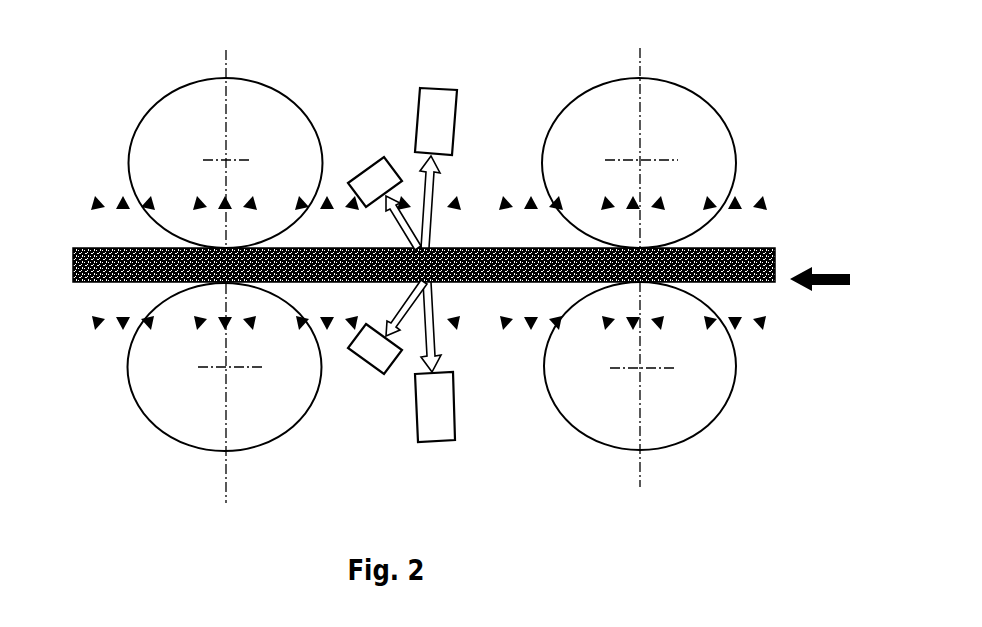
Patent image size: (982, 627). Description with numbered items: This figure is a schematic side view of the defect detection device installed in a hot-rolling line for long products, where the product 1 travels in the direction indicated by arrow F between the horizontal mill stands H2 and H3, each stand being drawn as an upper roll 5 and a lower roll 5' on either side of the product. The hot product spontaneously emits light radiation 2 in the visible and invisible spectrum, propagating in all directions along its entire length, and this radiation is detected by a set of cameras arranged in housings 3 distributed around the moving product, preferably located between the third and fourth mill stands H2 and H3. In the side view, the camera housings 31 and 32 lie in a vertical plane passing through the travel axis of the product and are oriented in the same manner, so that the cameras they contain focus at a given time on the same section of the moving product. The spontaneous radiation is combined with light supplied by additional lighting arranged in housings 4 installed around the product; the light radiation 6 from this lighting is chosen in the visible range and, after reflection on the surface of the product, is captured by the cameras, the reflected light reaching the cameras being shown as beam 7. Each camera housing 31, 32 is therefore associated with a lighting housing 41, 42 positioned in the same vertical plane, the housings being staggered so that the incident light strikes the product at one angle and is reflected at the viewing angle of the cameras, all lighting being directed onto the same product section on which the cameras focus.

The product 1 is at (777, 251).
The light radiation 2 is at (95, 220).
The housings 3 is at (467, 253).
The housing 31 is at (445, 120).
The housing 32 is at (437, 428).
The housings 4 is at (383, 233).
The housing containing additional lighting 41 is at (385, 152).
The housing containing additional lighting 42 is at (377, 352).
The upper work roll 5 is at (445, 269).
The lower work roll 5' is at (432, 381).
The light radiation 6 is at (385, 203).
The vertical measuring beam 7 is at (433, 188).
The arrow F is at (820, 292).
The horizontal mill stand H2 is at (757, 367).
The horizontal mill stand H3 is at (117, 385).